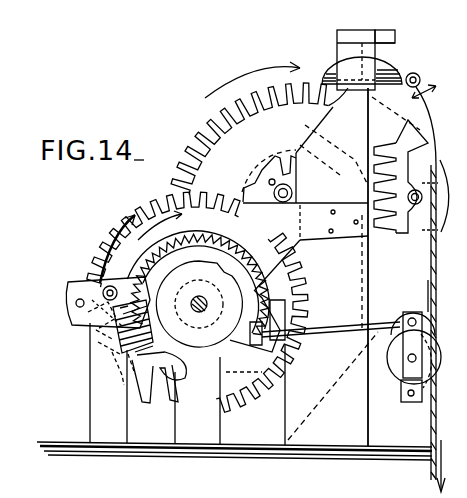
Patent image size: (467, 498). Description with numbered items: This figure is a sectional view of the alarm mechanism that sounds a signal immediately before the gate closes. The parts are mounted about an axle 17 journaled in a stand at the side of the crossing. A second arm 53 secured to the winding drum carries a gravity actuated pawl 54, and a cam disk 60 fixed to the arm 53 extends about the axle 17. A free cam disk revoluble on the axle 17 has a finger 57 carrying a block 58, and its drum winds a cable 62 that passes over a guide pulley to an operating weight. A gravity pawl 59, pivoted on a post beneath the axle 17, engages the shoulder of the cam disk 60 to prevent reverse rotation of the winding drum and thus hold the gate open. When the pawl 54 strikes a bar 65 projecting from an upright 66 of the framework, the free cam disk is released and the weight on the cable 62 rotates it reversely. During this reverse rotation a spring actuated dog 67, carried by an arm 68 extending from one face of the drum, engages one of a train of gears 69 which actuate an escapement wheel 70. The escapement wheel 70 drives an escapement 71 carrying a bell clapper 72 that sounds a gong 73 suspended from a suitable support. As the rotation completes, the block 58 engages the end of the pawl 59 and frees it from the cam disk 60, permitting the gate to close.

The axle 17 is at (199, 306).
The second arm 53 is at (110, 350).
The gravity actuated pawl 54 is at (150, 363).
The finger 57 is at (365, 341).
The block 58 is at (262, 336).
The gravity pawl 59 is at (280, 318).
The cam disk 60 is at (200, 290).
The cable 62 is at (253, 356).
The bar 65 is at (335, 210).
The upright 66 is at (374, 146).
The spring actuated dog 67 is at (76, 319).
The arm 68 is at (78, 298).
The train of gears 69 is at (209, 207).
The escapement wheel 70 is at (259, 139).
The escapement 71 is at (417, 152).
The bell clapper 72 is at (420, 77).
The gong 73 is at (378, 72).